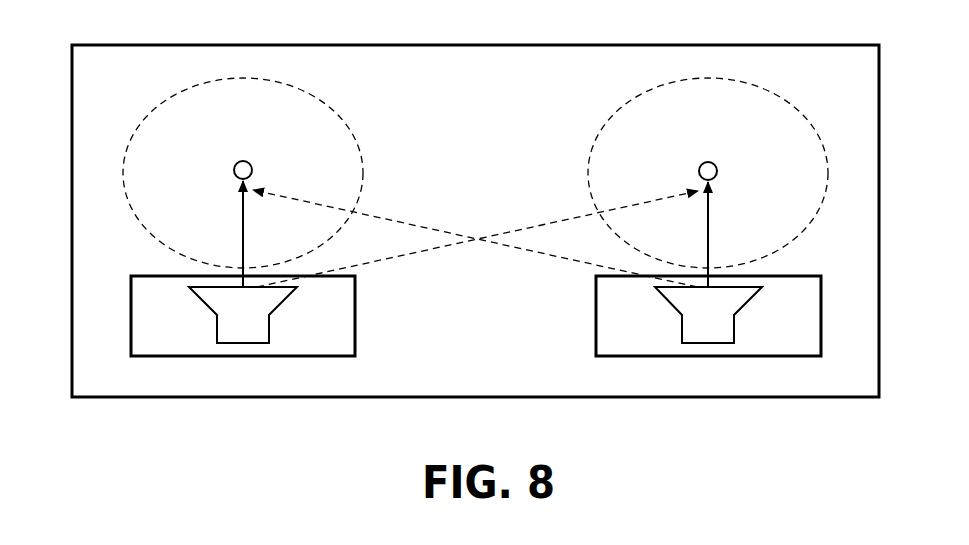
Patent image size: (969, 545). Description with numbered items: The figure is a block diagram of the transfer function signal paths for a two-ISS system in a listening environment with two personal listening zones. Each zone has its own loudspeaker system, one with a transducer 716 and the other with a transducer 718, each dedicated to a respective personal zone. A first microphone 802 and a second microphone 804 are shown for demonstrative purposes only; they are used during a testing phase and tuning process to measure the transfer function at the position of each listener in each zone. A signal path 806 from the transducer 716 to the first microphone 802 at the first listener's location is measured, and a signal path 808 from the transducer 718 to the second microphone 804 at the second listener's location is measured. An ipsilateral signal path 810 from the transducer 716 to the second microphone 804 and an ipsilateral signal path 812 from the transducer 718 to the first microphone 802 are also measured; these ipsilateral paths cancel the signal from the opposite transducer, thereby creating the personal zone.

The transducer 716 is at (215, 326).
The transducer 718 is at (737, 327).
The first microphone 802 is at (232, 170).
The second microphone 804 is at (722, 172).
The signal path 806 is at (240, 229).
The signal path 808 is at (712, 229).
The ipsilateral signal path 810 is at (403, 255).
The ipsilateral signal path 812 is at (540, 254).